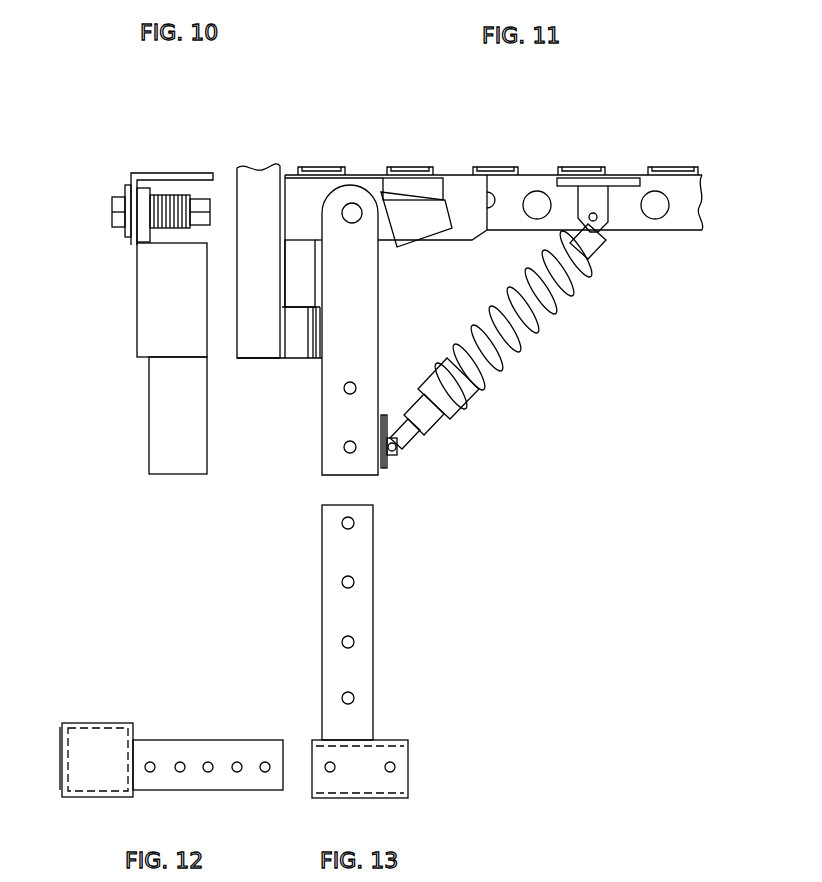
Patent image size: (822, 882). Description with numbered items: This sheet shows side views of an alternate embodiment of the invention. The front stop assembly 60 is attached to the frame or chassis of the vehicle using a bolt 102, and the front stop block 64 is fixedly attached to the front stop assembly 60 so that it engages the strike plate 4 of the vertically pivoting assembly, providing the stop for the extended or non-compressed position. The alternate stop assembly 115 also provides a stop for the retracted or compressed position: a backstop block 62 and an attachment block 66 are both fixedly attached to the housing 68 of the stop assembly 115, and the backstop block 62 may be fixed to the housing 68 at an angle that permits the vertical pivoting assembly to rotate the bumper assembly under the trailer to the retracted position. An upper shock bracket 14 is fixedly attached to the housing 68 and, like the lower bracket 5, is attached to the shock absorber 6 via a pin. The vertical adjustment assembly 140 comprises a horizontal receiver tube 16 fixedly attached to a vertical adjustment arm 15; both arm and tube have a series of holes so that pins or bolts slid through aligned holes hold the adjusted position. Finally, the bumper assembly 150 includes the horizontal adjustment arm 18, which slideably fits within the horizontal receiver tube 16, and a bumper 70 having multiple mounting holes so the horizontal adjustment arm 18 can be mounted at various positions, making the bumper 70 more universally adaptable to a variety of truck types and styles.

In FIG. 10, the bolt 102 is at (165, 190).
In FIG. 11, the front stop assembly 60 is at (267, 190).
In FIG. 11, the backstop block 62 is at (421, 202).
In FIG. 11, the attachment block 66 is at (400, 190).
In FIG. 11, the housing 68 is at (697, 193).
In FIG. 11, the strike plate 4 is at (318, 277).
In FIG. 11, the upper shock bracket 14 is at (603, 227).
In FIG. 11, the stop assembly 115 is at (632, 353).
In FIG. 11, the shock absorber 6 is at (508, 367).
In FIG. 11, the lower bracket 5 is at (398, 456).
In FIG. 11, the front stop block 64 is at (310, 362).
In FIG. 13, the vertical adjustment arm 15 is at (370, 652).
In FIG. 13, the horizontal receiver tube 16 is at (398, 782).
In FIG. 13, the vertical adjustment assembly 140 is at (458, 696).
In FIG. 12, the bumper assembly 150 is at (218, 709).
In FIG. 12, the bumper 70 is at (60, 790).
In FIG. 12, the horizontal adjustment arm 18 is at (232, 780).